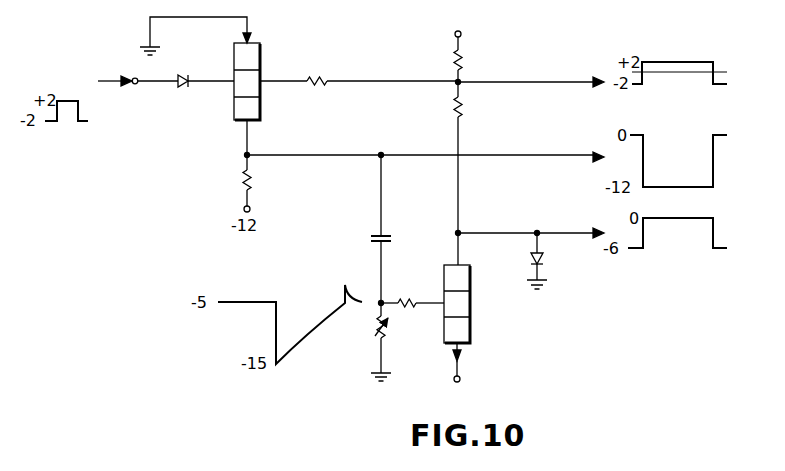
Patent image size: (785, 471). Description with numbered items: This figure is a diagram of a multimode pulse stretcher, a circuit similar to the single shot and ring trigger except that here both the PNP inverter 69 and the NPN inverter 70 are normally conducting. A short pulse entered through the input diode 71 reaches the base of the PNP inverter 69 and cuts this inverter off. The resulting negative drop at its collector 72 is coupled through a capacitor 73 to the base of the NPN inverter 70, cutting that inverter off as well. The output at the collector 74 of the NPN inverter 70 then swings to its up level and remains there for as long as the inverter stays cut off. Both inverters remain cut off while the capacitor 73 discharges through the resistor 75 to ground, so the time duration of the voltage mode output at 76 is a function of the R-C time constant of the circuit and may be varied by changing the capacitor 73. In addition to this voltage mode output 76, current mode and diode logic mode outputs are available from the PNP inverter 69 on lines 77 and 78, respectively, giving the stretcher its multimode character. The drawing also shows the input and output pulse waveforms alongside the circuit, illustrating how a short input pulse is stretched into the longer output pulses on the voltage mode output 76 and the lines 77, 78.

The PNP inverter 69 is at (267, 71).
The NPN inverter 70 is at (479, 308).
The input diode 71 is at (183, 87).
The collector 72 is at (262, 112).
The capacitor 73 is at (392, 232).
The collector 74 is at (466, 265).
The resistor 75 is at (372, 333).
The voltage mode output 76 is at (540, 231).
The current mode output line 77 is at (536, 87).
The diode logic mode output line 78 is at (514, 160).